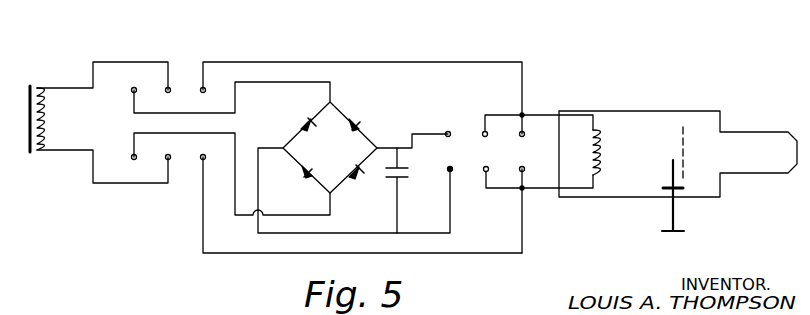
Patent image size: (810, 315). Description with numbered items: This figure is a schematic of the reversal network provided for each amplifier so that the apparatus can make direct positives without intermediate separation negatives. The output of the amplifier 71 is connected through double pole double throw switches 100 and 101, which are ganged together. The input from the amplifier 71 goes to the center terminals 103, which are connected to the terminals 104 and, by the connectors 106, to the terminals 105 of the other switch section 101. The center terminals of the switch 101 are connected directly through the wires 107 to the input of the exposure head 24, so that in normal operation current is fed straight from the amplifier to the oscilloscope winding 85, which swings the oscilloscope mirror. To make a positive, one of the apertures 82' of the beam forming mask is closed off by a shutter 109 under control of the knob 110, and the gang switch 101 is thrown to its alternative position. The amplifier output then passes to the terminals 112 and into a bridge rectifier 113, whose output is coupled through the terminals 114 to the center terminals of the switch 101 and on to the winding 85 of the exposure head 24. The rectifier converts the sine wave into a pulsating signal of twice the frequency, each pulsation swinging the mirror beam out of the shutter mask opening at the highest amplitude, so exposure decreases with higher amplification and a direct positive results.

The amplifier 71 is at (38, 86).
The double pole double throw switch 100 is at (183, 91).
The center terminals 103 is at (163, 94).
The terminals 112 is at (131, 89).
The terminals 104 is at (201, 93).
The connectors 106 is at (422, 46).
The bridge rectifier 113 is at (354, 167).
The terminals 114 is at (462, 124).
The wires 107 is at (512, 102).
The terminals 105 is at (522, 136).
The double pole double throw switch 101 is at (474, 162).
The exposure head 24 is at (696, 96).
The winding 85 is at (605, 152).
The apertures 82' is at (703, 152).
The shutter 109 is at (670, 187).
The knob 110 is at (662, 232).